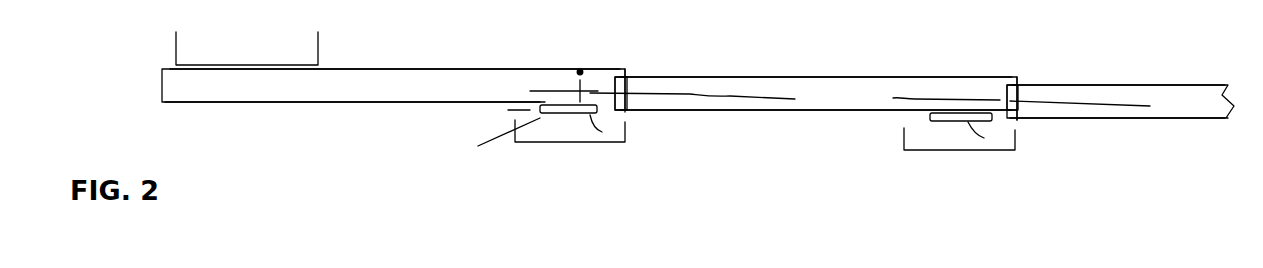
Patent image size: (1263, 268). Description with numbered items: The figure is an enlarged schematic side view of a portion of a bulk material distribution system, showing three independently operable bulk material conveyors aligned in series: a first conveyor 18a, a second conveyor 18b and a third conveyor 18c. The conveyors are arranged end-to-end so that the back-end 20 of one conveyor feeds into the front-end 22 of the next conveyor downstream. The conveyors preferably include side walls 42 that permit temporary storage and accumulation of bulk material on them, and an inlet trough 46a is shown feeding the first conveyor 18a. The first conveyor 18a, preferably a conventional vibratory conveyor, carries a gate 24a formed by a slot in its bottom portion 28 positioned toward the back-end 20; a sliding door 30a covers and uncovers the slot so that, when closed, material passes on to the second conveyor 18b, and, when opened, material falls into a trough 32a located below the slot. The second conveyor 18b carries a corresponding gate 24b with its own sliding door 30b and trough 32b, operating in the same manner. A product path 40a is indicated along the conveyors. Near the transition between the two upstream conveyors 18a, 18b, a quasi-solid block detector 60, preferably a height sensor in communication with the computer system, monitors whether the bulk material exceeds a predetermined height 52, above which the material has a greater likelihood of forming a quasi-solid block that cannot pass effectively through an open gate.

The first conveyor 18a is at (231, 90).
The second conveyor 18b is at (827, 77).
The third conveyor 18c is at (1176, 85).
The back-end 20 is at (627, 70).
The front-end 22 is at (161, 88).
The gate 24a is at (607, 112).
The gate 24b is at (999, 118).
The bottom portion 28 is at (270, 103).
The sliding door 30a is at (602, 132).
The sliding door 30b is at (984, 138).
The trough 32a is at (560, 142).
The trough 32b is at (950, 150).
The product path 40a is at (733, 96).
The side walls 42 is at (396, 69).
The inlet trough 46a is at (175, 42).
The predetermined height 52 is at (584, 88).
The quasi-solid block detector 60 is at (579, 69).